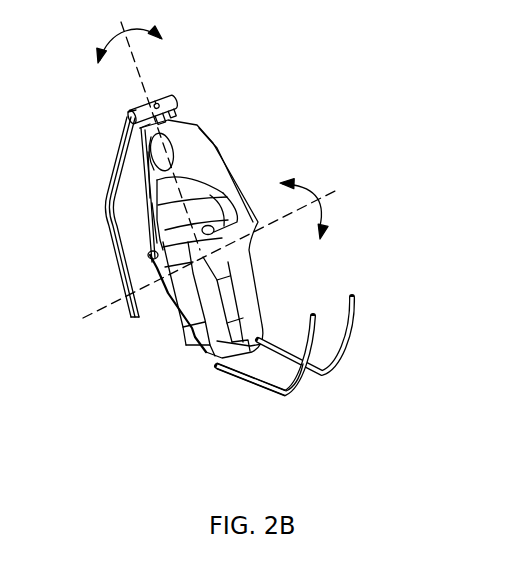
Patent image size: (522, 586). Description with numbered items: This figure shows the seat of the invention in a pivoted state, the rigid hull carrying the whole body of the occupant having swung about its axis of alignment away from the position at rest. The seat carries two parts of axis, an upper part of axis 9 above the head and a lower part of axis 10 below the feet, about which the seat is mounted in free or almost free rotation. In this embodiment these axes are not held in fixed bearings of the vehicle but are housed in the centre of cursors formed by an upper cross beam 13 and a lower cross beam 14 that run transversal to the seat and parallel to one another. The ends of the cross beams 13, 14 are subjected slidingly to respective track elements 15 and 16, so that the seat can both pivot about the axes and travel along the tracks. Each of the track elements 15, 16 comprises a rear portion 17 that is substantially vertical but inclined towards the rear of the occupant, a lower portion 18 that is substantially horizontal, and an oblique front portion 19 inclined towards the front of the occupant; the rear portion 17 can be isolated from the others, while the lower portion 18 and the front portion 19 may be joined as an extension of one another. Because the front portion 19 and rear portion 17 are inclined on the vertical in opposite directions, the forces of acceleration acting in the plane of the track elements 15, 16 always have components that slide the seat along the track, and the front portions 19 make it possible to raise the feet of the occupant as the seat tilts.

The part of axis 9 is at (177, 106).
The part of axis 10 is at (223, 360).
The upper cross beam 13 is at (122, 118).
The lower cross beam 14 is at (282, 241).
The track element 15 is at (317, 313).
The track element 16 is at (356, 296).
The rear portion 17 is at (113, 247).
The lower portion 18 is at (246, 382).
The front portion 19 is at (302, 385).